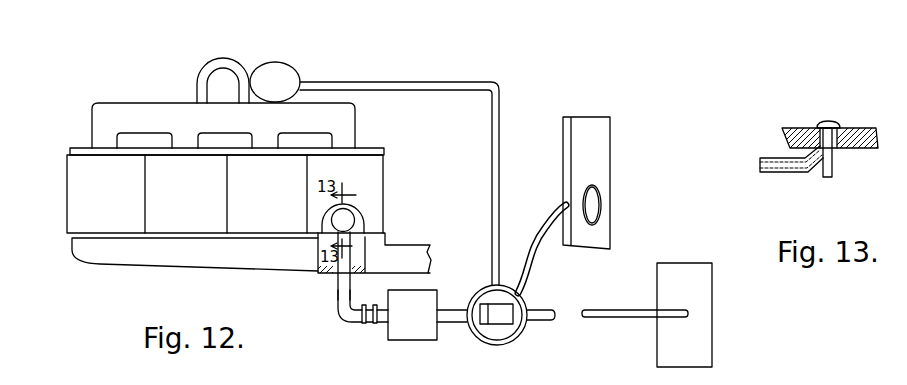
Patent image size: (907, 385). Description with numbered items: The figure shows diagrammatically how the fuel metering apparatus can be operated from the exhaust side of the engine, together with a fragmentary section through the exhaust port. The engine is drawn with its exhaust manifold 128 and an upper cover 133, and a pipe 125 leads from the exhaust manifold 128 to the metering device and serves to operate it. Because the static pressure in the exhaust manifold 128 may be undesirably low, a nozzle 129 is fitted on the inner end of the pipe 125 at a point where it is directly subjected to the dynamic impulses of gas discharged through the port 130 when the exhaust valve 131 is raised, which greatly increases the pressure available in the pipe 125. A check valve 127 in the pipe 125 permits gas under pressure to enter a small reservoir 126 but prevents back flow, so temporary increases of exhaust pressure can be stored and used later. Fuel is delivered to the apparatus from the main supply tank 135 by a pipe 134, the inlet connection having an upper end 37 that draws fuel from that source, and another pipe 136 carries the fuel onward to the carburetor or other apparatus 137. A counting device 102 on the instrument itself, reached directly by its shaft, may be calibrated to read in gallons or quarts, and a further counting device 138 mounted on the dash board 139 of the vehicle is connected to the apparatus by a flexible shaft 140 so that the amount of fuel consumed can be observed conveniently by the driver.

In FIG. 12, the upper end of inlet connection 37 is at (538, 323).
In FIG. 12, the counting device 102 is at (490, 326).
In FIG. 12, the pipe 125 is at (340, 296).
In FIG. 12, the reservoir 126 is at (412, 332).
In FIG. 12, the check valve 127 is at (372, 326).
In FIG. 12, the exhaust manifold 128 is at (268, 258).
In FIG. 12, the nozzle 129 is at (350, 236).
In FIG. 13, the nozzle 129 is at (812, 175).
In FIG. 13, the port 130 is at (838, 150).
In FIG. 13, the exhaust valve 131 is at (833, 122).
In FIG. 12, the valve cover 133 is at (148, 117).
In FIG. 12, the pipe 134 is at (597, 318).
In FIG. 12, the main supply tank 135 is at (690, 348).
In FIG. 12, the pipe 136 is at (492, 162).
In FIG. 12, the carburetor or other apparatus 137 is at (260, 54).
In FIG. 12, the counting device 138 is at (602, 200).
In FIG. 12, the dash board 139 is at (593, 166).
In FIG. 12, the flexible shaft 140 is at (535, 266).